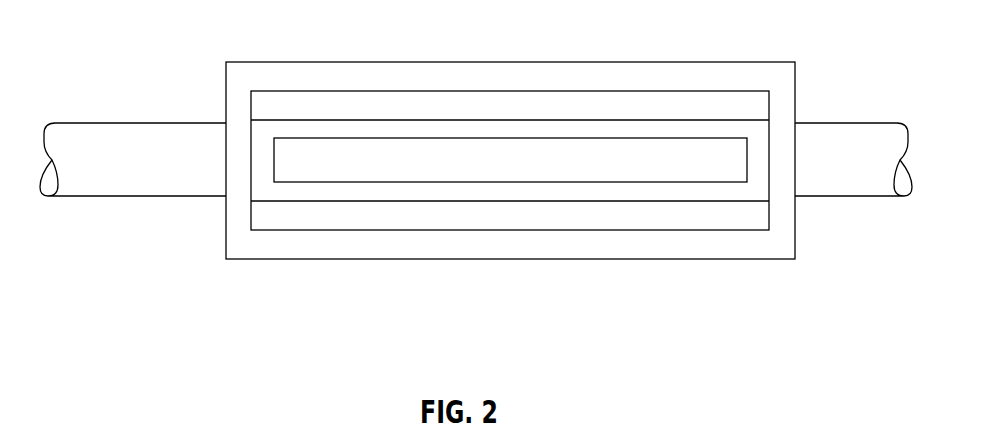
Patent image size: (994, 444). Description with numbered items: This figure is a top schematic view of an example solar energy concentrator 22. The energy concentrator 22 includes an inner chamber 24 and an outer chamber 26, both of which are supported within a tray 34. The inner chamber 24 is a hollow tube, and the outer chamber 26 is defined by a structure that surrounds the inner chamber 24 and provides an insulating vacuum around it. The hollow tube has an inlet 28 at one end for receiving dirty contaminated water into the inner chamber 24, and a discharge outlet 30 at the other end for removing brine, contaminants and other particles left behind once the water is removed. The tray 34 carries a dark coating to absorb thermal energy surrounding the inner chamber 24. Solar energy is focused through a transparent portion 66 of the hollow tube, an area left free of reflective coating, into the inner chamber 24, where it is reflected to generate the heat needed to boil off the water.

The energy concentrator 22 is at (397, 276).
The inner chamber 24 is at (695, 192).
The outer chamber 26 is at (569, 217).
The inlet 28 is at (154, 182).
The discharge outlet 30 is at (859, 186).
The tray 34 is at (271, 248).
The transparent portion 66 is at (545, 138).